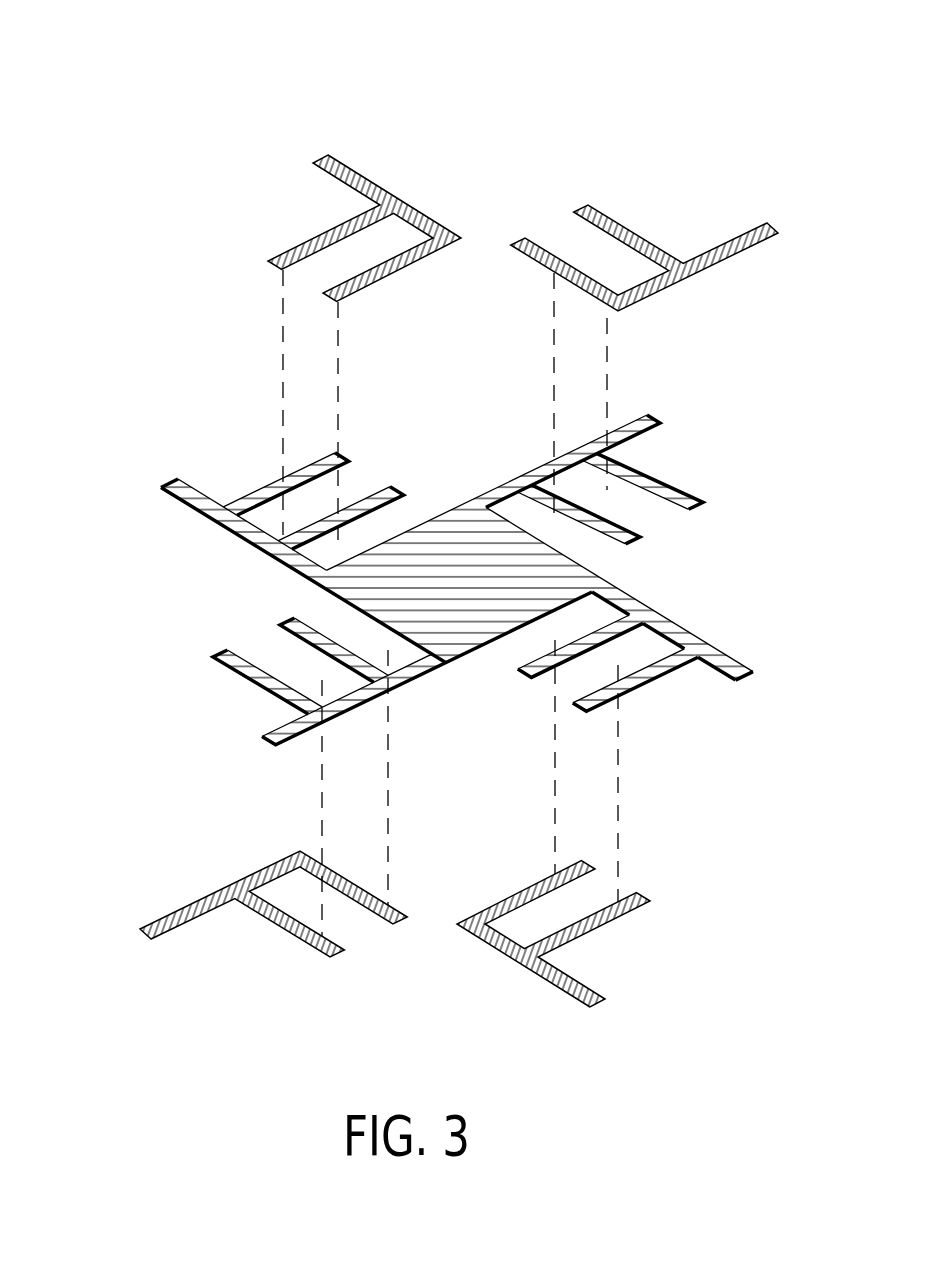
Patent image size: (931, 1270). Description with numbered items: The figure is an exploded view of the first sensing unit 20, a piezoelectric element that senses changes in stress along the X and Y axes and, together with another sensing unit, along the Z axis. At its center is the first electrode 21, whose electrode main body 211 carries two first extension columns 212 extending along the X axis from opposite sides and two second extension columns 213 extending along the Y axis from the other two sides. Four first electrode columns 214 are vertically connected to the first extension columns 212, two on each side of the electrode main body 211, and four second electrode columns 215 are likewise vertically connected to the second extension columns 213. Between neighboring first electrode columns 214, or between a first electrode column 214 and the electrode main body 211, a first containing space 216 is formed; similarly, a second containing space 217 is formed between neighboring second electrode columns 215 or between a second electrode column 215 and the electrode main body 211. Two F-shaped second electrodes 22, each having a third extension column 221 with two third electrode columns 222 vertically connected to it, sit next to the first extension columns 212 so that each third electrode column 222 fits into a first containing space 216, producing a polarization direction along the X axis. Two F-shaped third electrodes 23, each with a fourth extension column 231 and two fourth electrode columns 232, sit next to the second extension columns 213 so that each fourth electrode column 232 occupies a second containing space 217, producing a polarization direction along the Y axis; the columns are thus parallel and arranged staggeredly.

The first sensing unit 20 is at (118, 93).
The first electrode 21 is at (448, 544).
The second electrode 22 is at (487, 578).
The third electrode 23 is at (463, 575).
The electrode main body 211 is at (478, 530).
The first extension column 212 is at (178, 480).
The second extension column 213 is at (652, 416).
The first electrode column 214 is at (265, 485).
The second electrode column 215 is at (665, 486).
The first containing space 216 is at (353, 475).
The second containing space 217 is at (668, 528).
The third extension column 221 is at (323, 160).
The third electrode column 222 is at (320, 237).
The fourth extension column 231 is at (772, 224).
The fourth electrode column 232 is at (527, 238).